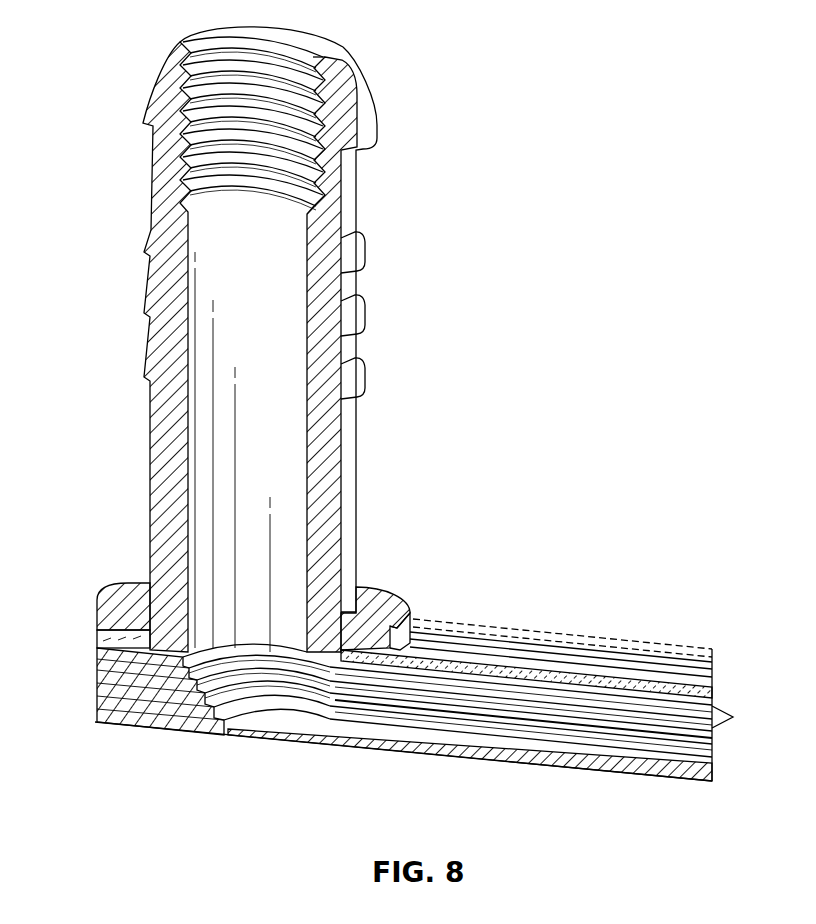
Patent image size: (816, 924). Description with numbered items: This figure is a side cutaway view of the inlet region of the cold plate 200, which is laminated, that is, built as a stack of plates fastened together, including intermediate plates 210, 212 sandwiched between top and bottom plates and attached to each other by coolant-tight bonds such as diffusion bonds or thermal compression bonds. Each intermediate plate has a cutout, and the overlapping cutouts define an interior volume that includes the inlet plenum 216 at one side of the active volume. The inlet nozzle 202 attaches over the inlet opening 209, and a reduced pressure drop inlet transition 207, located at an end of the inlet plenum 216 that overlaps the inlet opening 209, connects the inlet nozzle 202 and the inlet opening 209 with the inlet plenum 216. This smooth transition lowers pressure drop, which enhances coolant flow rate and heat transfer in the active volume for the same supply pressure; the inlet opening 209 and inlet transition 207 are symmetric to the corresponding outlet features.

The inlet nozzle 202 is at (392, 145).
The inlet transition 207 is at (258, 633).
The intermediate plate 210 is at (220, 670).
The inlet opening 209 is at (152, 653).
The intermediate plate 212 is at (245, 697).
The inlet plenum 216 is at (575, 752).
The cold plate 200 is at (538, 615).